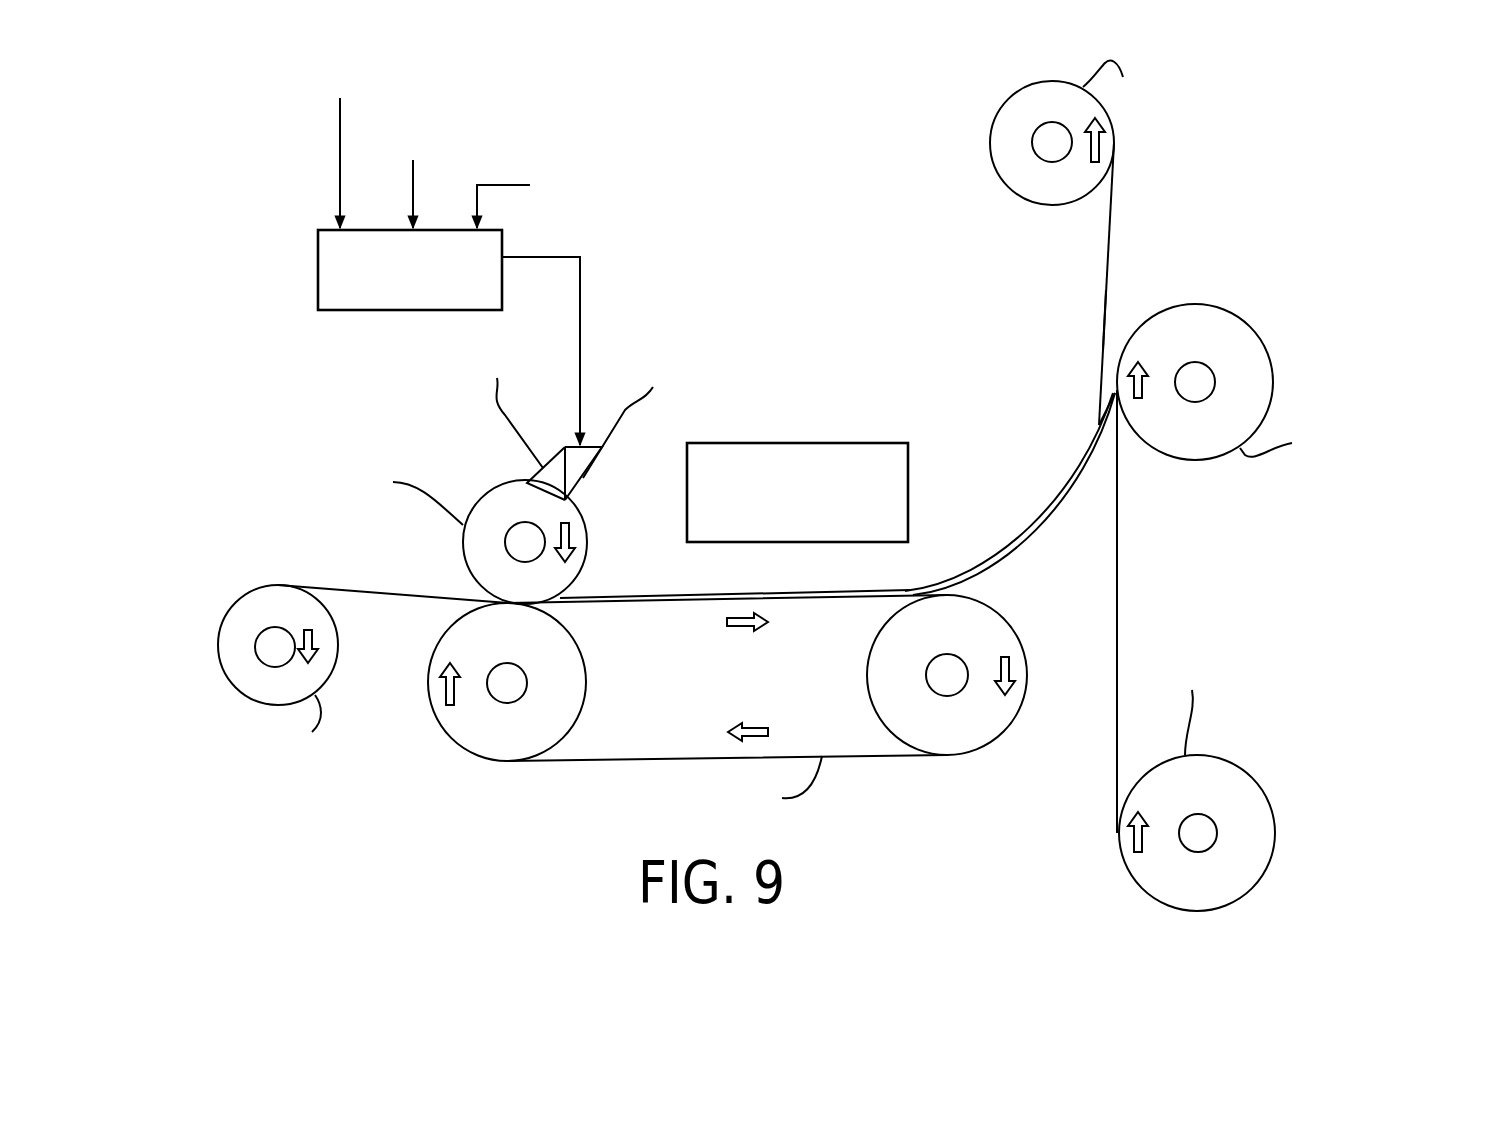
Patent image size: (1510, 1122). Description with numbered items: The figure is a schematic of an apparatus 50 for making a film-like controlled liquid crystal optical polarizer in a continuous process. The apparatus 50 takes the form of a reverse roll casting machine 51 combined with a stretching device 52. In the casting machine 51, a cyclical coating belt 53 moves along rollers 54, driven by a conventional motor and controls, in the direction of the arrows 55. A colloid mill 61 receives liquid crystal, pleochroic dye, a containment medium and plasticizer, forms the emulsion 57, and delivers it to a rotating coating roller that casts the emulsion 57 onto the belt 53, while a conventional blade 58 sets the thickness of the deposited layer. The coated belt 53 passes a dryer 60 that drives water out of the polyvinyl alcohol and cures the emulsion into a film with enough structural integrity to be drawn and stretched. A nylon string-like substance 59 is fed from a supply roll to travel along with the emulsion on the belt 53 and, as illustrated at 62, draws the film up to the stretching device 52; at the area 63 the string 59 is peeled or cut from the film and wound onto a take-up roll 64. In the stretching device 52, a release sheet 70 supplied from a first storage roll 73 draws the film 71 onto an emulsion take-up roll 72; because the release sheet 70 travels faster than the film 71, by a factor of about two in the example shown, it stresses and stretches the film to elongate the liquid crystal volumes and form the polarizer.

The apparatus 50 is at (937, 448).
The reverse roll casting machine 51 is at (676, 587).
The stretching device 52 is at (1076, 334).
The coating belt 53 is at (598, 760).
The rollers 54 is at (585, 672).
The arrows 55 is at (740, 632).
The emulsion 57 is at (537, 473).
The blade 58 is at (588, 472).
The string-like substance 59 is at (359, 592).
The dryer 60 is at (783, 443).
The colloid mill 61 is at (318, 270).
The film drawn by string 62 is at (1015, 533).
The area of string separation 63 is at (1085, 446).
The take-up roll 64 is at (1060, 197).
The release sheet 70 is at (1115, 603).
The film 71 is at (1103, 423).
The emulsion take-up roll 72 is at (1233, 300).
The first storage roll 73 is at (1247, 780).